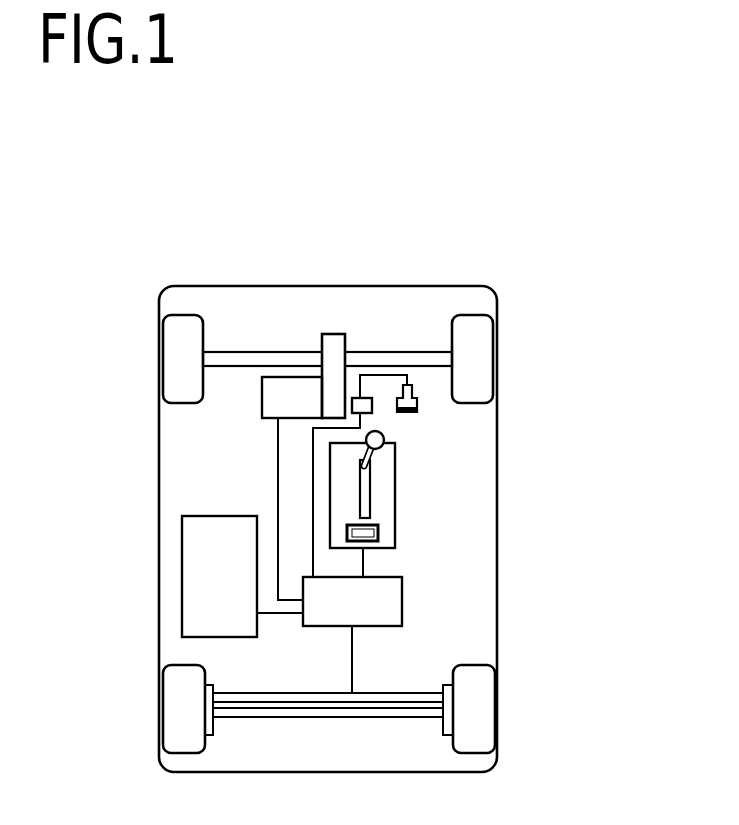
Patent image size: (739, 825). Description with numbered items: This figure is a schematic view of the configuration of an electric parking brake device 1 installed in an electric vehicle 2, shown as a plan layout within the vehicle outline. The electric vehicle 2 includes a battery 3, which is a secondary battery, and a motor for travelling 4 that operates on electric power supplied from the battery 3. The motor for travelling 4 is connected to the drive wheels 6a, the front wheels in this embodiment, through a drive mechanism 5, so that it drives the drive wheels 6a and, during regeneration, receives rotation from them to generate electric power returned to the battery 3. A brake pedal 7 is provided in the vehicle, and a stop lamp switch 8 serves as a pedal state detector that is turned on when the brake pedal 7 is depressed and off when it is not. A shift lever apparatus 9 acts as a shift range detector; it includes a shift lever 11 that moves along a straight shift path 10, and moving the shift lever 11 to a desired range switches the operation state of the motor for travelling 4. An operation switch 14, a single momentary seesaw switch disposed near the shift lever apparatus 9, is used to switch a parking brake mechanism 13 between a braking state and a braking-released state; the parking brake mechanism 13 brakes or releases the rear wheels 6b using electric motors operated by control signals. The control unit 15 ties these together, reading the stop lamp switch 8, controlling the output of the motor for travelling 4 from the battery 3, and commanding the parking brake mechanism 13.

The electric parking brake device 1 is at (570, 238).
The electric vehicle 2 is at (187, 287).
The battery 3 is at (190, 537).
The motor for travelling 4 is at (293, 385).
The drive mechanism 5 is at (334, 348).
The drive wheels 6a is at (172, 335).
The rear wheels 6b is at (168, 684).
The brake pedal 7 is at (416, 396).
The stop lamp switch 8 is at (361, 397).
The shift lever apparatus 9 is at (443, 488).
The shift path 10 is at (366, 502).
The shift lever 11 is at (384, 437).
The parking brake mechanism 13 is at (447, 668).
The operation switch 14 is at (370, 533).
The control unit 15 is at (402, 607).